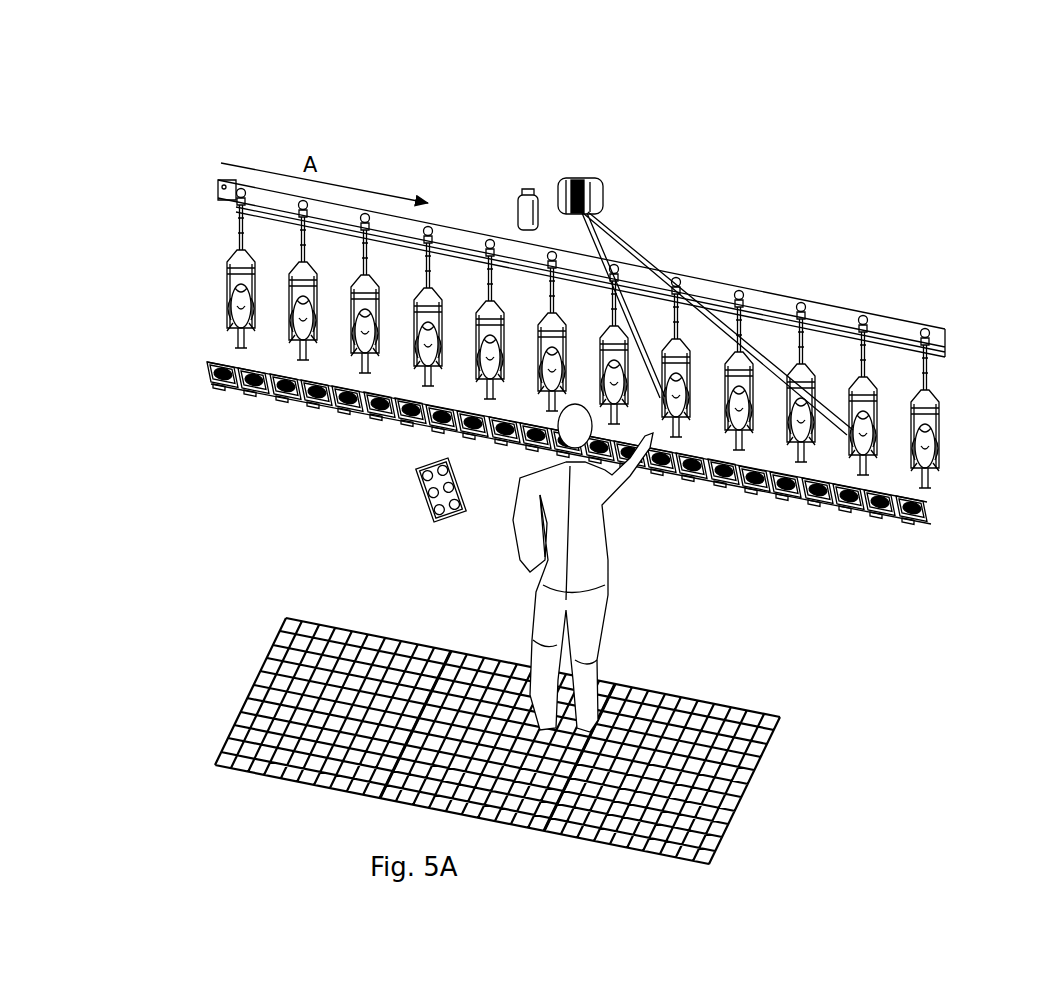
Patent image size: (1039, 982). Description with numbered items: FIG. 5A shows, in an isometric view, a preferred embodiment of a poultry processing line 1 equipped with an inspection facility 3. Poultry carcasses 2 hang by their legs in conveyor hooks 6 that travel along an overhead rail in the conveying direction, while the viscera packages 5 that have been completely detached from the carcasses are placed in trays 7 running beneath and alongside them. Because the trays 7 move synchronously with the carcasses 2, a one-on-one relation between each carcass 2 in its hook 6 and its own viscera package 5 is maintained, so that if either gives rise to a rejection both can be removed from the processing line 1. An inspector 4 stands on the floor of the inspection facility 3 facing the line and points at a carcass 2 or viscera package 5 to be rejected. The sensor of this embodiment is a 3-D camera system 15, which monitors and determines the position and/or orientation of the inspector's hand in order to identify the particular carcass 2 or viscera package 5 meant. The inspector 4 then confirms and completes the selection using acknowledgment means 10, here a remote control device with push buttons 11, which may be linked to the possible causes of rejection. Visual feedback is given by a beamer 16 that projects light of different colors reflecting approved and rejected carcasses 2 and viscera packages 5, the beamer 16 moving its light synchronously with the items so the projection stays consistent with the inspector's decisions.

The processing line 1 is at (827, 288).
The poultry carcass 2 is at (927, 460).
The inspection facility 3 is at (265, 618).
The inspector 4 is at (602, 534).
The viscera package 5 is at (838, 506).
The conveyor hook 6 is at (938, 405).
The tray 7 is at (927, 512).
The acknowledgment means 10 is at (410, 470).
The push button 11 is at (427, 510).
The 3-D camera system 15 is at (525, 192).
The beamer 16 is at (600, 176).